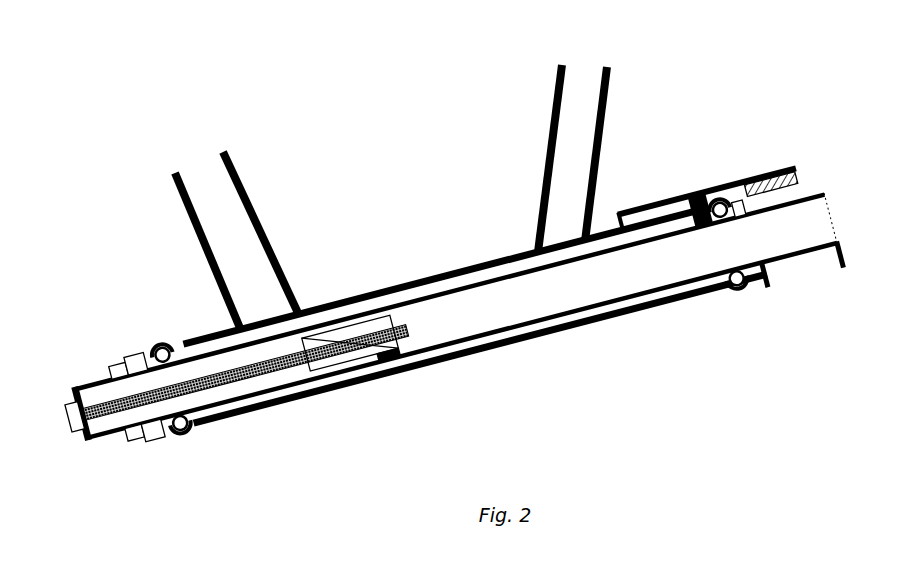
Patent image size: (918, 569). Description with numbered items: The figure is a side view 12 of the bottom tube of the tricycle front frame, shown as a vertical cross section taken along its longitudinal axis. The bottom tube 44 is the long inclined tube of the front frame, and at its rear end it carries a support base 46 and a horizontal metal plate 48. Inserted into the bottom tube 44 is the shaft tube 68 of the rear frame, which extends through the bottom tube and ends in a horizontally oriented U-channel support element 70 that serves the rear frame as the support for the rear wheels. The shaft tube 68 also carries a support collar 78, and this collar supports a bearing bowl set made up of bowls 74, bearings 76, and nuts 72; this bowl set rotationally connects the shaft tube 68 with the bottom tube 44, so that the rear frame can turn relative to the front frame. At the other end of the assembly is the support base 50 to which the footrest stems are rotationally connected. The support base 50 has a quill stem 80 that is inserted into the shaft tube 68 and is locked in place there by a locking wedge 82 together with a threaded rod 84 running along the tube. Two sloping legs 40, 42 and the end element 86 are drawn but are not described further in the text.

The side view 12 is at (378, 108).
The first leg 40 is at (252, 200).
The second leg 42 is at (545, 152).
The bottom tube 44 is at (600, 330).
The support base 46 is at (664, 198).
The horizontal metal plate 48 is at (797, 172).
The support base 50 is at (92, 380).
The shaft tube 68 is at (503, 335).
The U-channel support element 70 is at (824, 265).
The nuts 72 is at (170, 445).
The bowls 74 is at (737, 290).
The bearings 76 is at (160, 343).
The support collar 78 is at (760, 284).
The quill stem 80 is at (302, 398).
The locking wedge 82 is at (390, 360).
The threaded rod 84 is at (440, 372).
The knob 86 is at (78, 435).